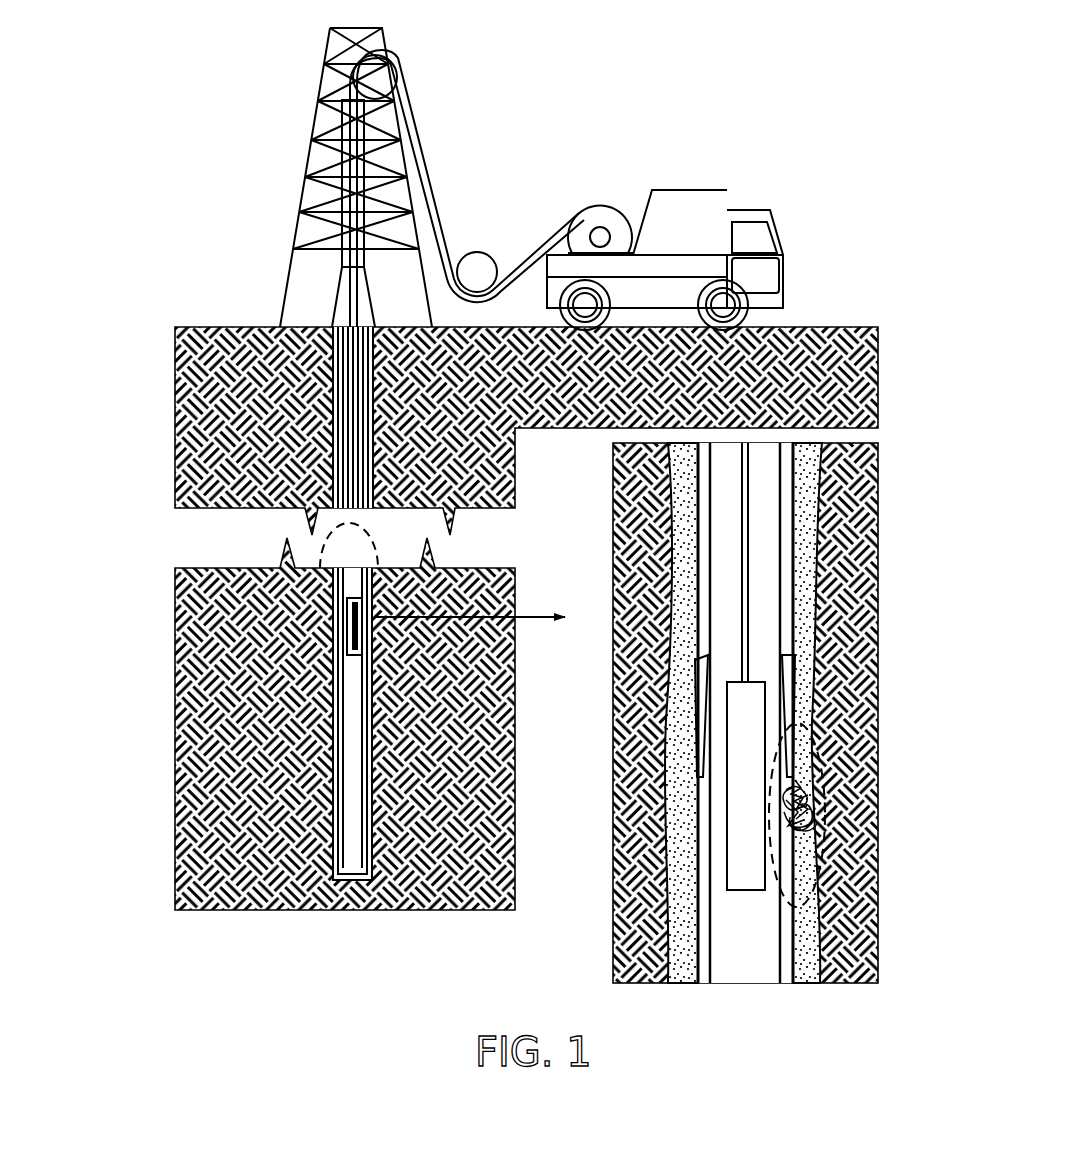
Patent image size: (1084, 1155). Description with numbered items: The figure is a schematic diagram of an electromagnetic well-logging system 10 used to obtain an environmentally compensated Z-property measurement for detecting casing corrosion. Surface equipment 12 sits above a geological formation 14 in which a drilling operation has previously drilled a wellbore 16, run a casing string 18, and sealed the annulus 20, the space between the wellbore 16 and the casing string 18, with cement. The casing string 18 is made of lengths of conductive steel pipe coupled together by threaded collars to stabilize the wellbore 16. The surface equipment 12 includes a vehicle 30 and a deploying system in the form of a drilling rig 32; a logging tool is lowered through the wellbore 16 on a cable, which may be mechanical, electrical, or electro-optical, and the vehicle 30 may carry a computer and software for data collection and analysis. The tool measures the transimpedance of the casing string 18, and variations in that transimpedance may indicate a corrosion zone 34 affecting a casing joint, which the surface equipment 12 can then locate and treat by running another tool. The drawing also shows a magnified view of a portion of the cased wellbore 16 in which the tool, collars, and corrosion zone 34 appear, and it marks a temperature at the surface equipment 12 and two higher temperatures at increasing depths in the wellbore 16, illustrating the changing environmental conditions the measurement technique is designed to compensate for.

The electromagnetic well-logging system 10 is at (150, 860).
The surface equipment 12 is at (556, 84).
The geological formation 14 is at (190, 670).
The wellbore 16 is at (325, 405).
The casing string 18 is at (350, 886).
The annulus 20 is at (322, 453).
The vehicle 30 is at (668, 190).
The drilling rig 32 is at (320, 97).
The corrosion zone 34 is at (765, 803).